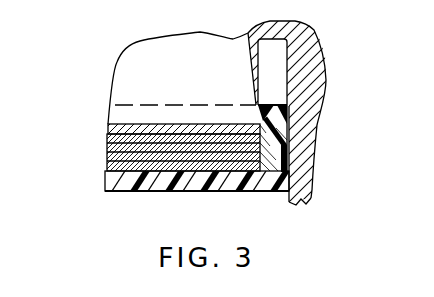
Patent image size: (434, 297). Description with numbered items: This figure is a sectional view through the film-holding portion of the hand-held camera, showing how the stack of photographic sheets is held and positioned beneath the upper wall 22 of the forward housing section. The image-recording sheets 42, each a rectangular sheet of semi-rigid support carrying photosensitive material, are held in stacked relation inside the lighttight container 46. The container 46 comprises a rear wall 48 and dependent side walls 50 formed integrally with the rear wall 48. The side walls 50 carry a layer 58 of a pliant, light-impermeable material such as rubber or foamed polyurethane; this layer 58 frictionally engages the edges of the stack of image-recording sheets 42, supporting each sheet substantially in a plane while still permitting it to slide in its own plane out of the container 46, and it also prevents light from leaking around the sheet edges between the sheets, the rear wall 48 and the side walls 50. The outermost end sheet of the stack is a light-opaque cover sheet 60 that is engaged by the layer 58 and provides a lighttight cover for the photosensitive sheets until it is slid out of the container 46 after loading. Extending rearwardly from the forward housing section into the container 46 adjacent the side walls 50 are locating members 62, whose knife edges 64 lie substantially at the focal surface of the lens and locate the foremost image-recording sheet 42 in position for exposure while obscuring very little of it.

The upper wall 22 is at (313, 78).
The image-recording sheet 42 is at (107, 134).
The lighttight container 46 is at (122, 203).
The rear wall 48 is at (180, 185).
The side walls 50 is at (273, 146).
The layer 58 is at (271, 122).
The cover sheet 60 is at (133, 125).
The locating members 62 is at (254, 58).
The knife edges 64 is at (239, 126).